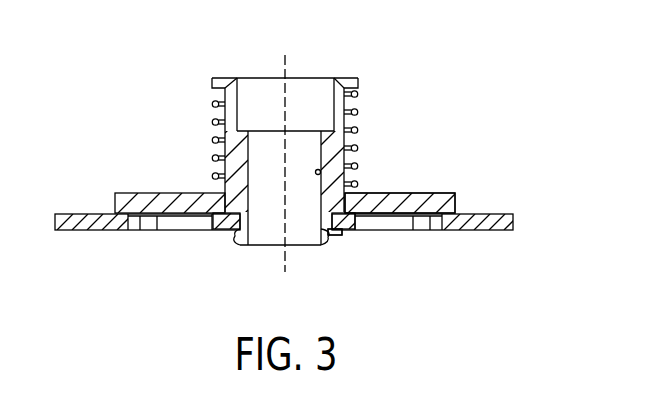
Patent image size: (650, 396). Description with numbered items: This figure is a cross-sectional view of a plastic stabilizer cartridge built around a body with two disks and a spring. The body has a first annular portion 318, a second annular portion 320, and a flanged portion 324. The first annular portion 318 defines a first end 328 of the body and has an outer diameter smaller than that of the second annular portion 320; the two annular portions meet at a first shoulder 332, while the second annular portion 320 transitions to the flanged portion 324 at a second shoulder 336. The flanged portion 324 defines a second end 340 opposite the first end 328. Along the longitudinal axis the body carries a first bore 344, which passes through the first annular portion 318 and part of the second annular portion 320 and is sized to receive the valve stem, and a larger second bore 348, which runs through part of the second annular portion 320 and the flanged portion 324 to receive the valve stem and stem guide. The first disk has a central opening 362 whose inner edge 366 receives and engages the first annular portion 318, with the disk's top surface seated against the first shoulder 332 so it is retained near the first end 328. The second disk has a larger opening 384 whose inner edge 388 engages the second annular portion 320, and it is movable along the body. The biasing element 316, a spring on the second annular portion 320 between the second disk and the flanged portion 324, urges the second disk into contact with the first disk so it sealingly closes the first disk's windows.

The biasing element 316 is at (357, 131).
The first annular portion 318 is at (250, 232).
The second annular portion 320 is at (228, 113).
The flanged portion 324 is at (357, 82).
The first end 328 is at (324, 232).
The first shoulder 332 is at (226, 200).
The second shoulder 336 is at (214, 78).
The second end 340 is at (345, 78).
The first bore 344 is at (320, 171).
The second bore 348 is at (336, 104).
The opening 362 is at (342, 222).
The inner edge 366 is at (342, 222).
The opening 384 is at (348, 203).
The inner edge 388 is at (348, 203).